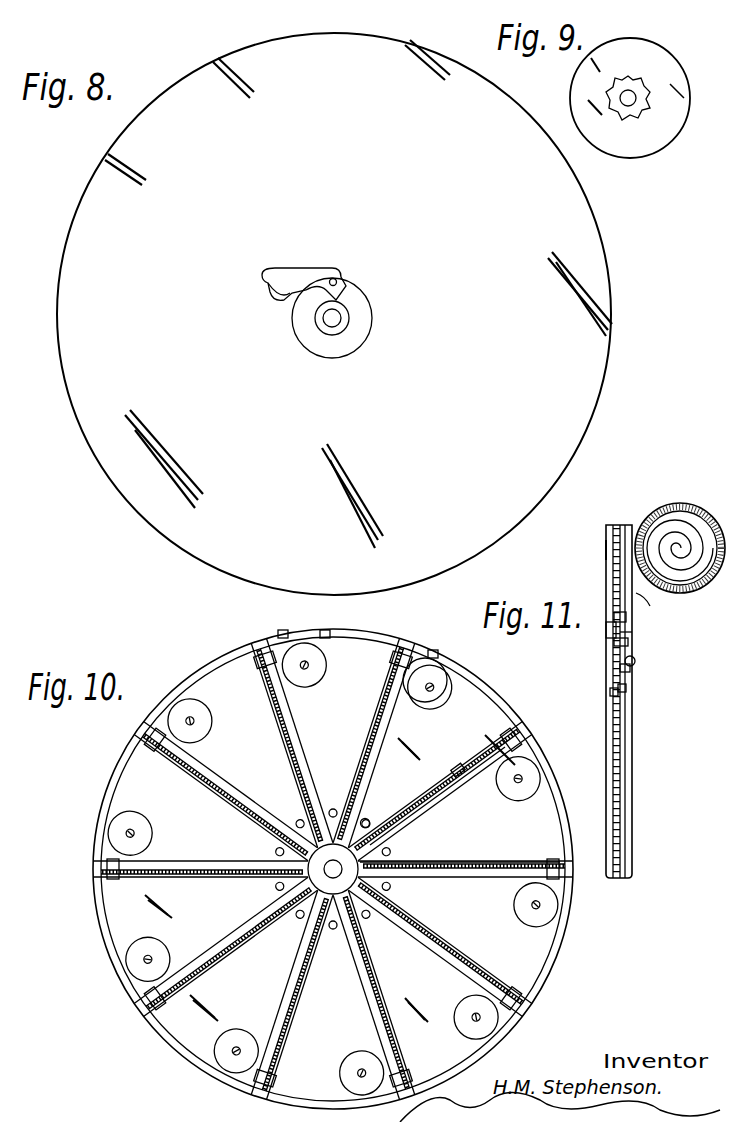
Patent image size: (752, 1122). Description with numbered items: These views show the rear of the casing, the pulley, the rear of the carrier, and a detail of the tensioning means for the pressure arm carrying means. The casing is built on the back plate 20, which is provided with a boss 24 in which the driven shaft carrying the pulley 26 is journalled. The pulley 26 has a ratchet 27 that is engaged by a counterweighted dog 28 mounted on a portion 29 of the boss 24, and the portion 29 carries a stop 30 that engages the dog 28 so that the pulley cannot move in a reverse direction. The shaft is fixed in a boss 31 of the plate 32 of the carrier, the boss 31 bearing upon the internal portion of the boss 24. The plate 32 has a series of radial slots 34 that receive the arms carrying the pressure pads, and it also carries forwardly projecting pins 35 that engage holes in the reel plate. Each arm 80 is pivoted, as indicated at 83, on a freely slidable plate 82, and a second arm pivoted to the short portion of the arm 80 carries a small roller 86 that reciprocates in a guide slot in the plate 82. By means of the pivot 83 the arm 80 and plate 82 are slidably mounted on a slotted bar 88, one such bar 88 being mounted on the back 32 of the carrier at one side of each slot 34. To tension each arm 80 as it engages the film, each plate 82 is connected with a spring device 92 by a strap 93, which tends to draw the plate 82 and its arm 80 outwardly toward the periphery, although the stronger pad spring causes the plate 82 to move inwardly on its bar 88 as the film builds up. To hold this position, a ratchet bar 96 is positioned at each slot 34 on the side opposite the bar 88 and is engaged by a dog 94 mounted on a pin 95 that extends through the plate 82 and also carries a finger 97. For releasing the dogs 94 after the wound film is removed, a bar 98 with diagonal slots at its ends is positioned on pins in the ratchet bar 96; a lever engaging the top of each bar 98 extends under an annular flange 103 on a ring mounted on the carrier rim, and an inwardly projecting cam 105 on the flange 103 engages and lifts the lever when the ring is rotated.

In FIG. 8, the back plate 20 is at (334, 314).
In FIG. 8, the boss 24 is at (371, 304).
In FIG. 9, the pulley 26 is at (638, 90).
In FIG. 9, the ratchet 27 is at (632, 78).
In FIG. 8, the counterweighted dog 28 is at (329, 277).
In FIG. 8, the portion of the boss 29 is at (312, 302).
In FIG. 8, the stop 30 is at (342, 292).
In FIG. 10, the boss of the carrier plate 31 is at (356, 858).
In FIG. 10, the plate of the carrier 32 is at (460, 712).
In FIG. 10, the radial slots 34 is at (297, 742).
In FIG. 11, the radial slots 34 is at (622, 762).
In FIG. 10, the pins 35 is at (369, 818).
In FIG. 11, the arm 80 is at (627, 688).
In FIG. 11, the slidable plate 82 is at (631, 668).
In FIG. 11, the pivot 83 is at (634, 660).
In FIG. 11, the roller 86 is at (628, 642).
In FIG. 10, the bar 88 is at (462, 790).
In FIG. 11, the bar 88 is at (634, 740).
In FIG. 10, the spring device 92 is at (432, 706).
In FIG. 11, the spring device 92 is at (648, 513).
In FIG. 11, the strap 93 is at (658, 606).
In FIG. 11, the dog 94 is at (615, 615).
In FIG. 11, the pin 95 is at (632, 633).
In FIG. 10, the ratchet bar 96 is at (480, 861).
In FIG. 11, the ratchet bar 96 is at (612, 692).
In FIG. 11, the finger 97 is at (614, 624).
In FIG. 10, the bar 98 is at (462, 770).
In FIG. 11, the bar 98 is at (607, 545).
In FIG. 10, the annular flange 103 is at (325, 633).
In FIG. 10, the cam 105 is at (285, 633).